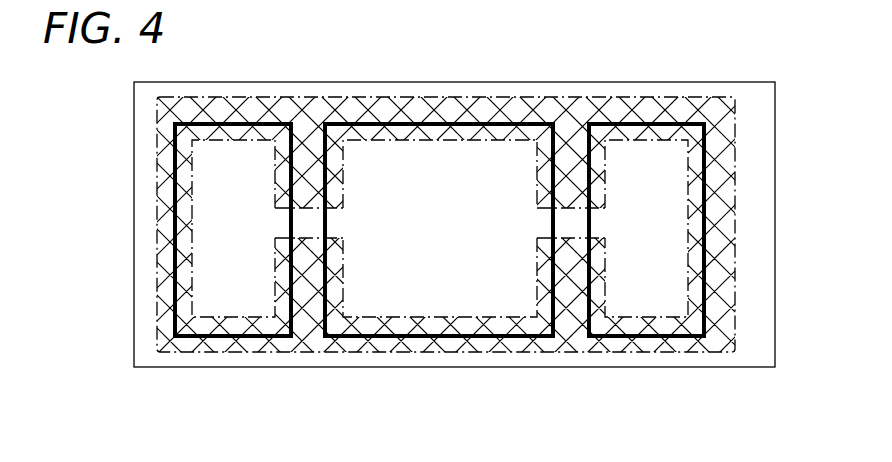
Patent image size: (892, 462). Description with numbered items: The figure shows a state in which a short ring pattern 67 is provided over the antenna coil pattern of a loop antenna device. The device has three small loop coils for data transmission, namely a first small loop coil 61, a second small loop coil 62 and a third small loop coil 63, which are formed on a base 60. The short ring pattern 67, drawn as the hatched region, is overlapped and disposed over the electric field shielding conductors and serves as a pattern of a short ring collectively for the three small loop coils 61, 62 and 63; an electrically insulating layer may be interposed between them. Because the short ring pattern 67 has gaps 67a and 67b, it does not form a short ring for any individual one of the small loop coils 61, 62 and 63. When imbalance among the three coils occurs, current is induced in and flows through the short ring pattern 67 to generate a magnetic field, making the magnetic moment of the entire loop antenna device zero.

The base 60 is at (775, 142).
The first small loop coil 61 is at (433, 336).
The second small loop coil 62 is at (227, 336).
The third small loop coil 63 is at (642, 336).
The short ring pattern 67 is at (446, 192).
The gap 67a is at (345, 225).
The gap 67b is at (607, 225).